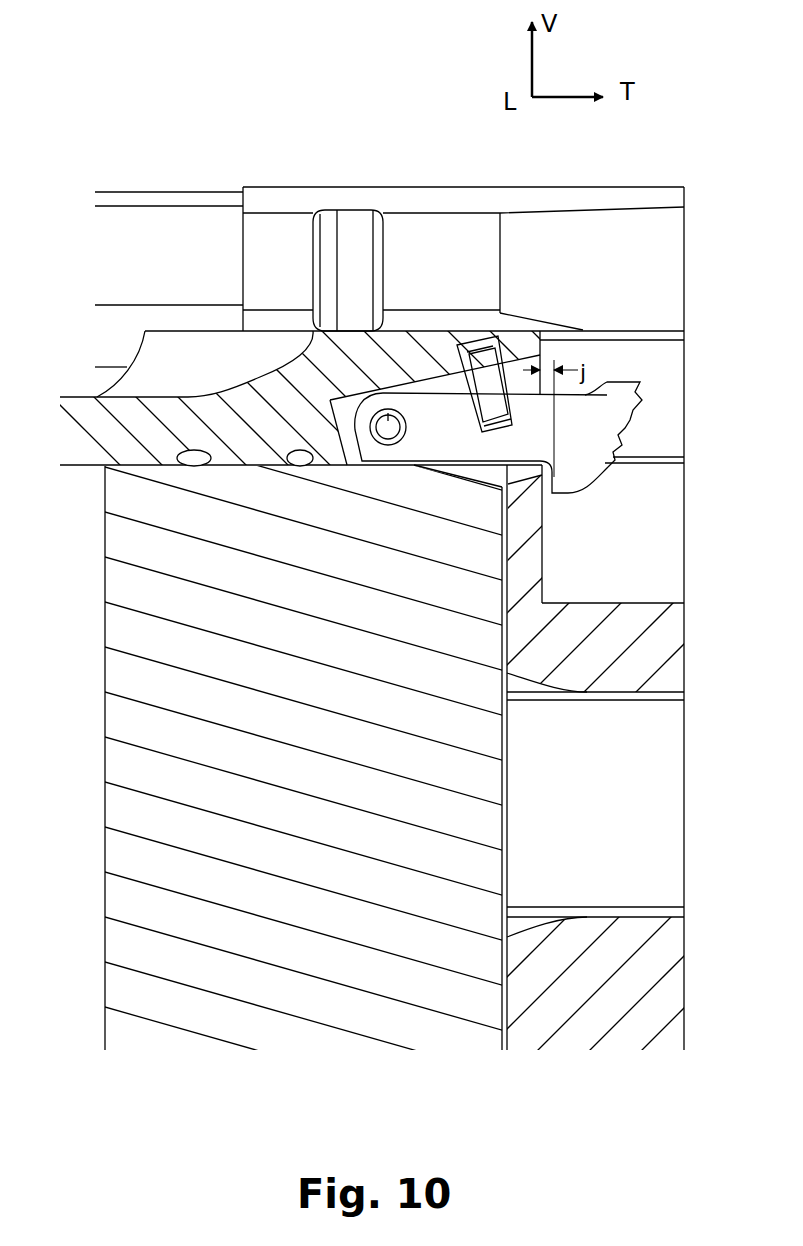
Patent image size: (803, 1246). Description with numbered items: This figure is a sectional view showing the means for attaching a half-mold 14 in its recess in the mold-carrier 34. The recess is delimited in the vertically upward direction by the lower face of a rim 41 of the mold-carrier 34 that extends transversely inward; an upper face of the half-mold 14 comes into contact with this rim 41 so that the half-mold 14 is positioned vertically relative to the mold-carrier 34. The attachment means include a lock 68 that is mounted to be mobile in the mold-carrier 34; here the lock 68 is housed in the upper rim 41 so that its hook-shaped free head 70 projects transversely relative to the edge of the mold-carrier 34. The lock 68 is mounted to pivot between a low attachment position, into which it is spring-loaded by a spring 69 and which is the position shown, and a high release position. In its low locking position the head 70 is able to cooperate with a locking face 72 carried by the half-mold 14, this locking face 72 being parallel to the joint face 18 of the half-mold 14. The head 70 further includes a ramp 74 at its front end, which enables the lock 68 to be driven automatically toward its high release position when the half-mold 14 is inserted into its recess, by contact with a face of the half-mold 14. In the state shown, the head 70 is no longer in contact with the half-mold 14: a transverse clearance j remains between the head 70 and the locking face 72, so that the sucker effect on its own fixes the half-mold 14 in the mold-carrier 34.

The half-mold 14 is at (704, 437).
The joint face 18 is at (684, 633).
The mold-carrier 34 is at (135, 583).
The rim 41 is at (528, 347).
The lock 68 is at (456, 432).
The spring 69 is at (485, 370).
The head 70 is at (603, 468).
The locking face 72 is at (545, 545).
The ramp 74 is at (578, 463).